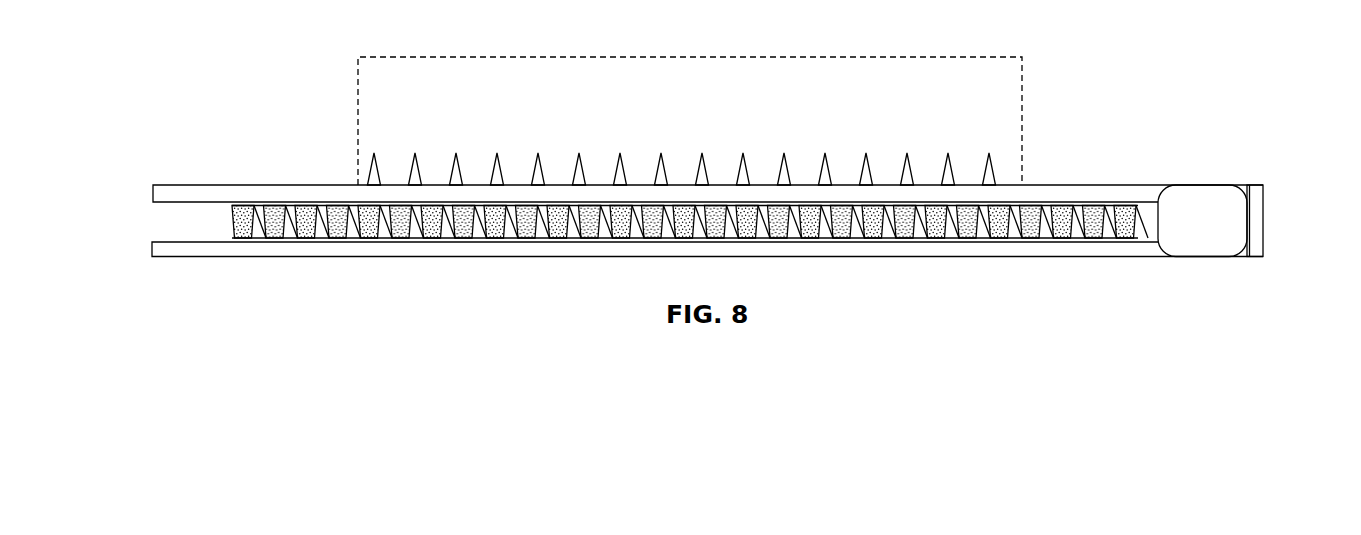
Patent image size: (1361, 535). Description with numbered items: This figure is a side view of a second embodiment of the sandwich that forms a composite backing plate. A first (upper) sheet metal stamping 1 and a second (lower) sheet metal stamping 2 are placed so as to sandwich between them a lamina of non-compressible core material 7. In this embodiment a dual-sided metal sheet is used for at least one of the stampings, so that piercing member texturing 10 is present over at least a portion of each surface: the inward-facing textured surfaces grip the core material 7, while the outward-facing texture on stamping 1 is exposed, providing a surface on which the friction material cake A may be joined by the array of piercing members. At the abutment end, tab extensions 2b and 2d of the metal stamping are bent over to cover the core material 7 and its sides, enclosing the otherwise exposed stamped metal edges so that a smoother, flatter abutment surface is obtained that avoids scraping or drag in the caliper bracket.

The first sheet metal stamping 1 is at (1077, 193).
The second sheet metal stamping 2 is at (1112, 246).
The tab extension 2b is at (1190, 197).
The tab extension 2d is at (1256, 221).
The core material 7 is at (240, 240).
The piercing member texturing 10 is at (340, 172).
The friction material cake A is at (690, 121).